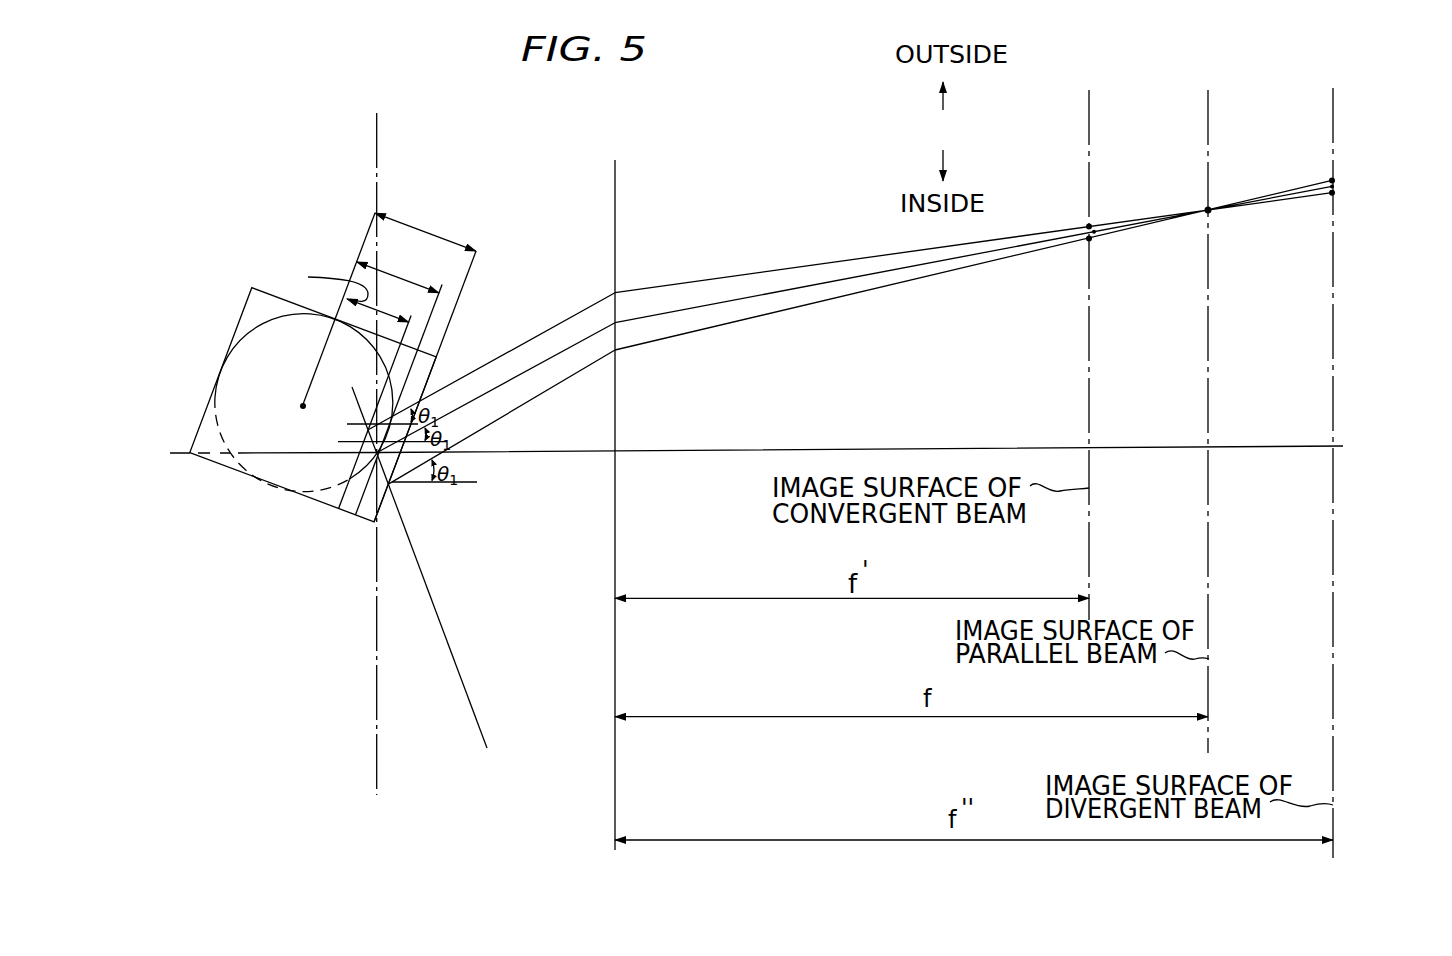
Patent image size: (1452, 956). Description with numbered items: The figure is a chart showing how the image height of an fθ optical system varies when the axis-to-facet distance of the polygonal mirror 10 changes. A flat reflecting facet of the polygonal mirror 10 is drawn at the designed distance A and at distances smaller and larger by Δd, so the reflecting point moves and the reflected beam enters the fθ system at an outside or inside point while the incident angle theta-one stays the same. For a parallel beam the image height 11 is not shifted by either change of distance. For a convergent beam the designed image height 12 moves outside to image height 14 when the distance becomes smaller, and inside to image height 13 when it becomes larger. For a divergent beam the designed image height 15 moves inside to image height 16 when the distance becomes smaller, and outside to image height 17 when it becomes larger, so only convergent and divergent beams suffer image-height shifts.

The polygonal mirror 10 is at (258, 306).
The image height of parallel beam 11 is at (1208, 210).
The image height of convergent beam at designed distance 12 is at (1097, 225).
The inside-shifted image height of convergent beam 13 is at (1088, 240).
The outside-shifted image height of convergent beam 14 is at (1089, 224).
The image height of divergent beam at designed distance 15 is at (1333, 187).
The inside-shifted image height of divergent beam 16 is at (1332, 193).
The outside-shifted image height of divergent beam 17 is at (1332, 180).